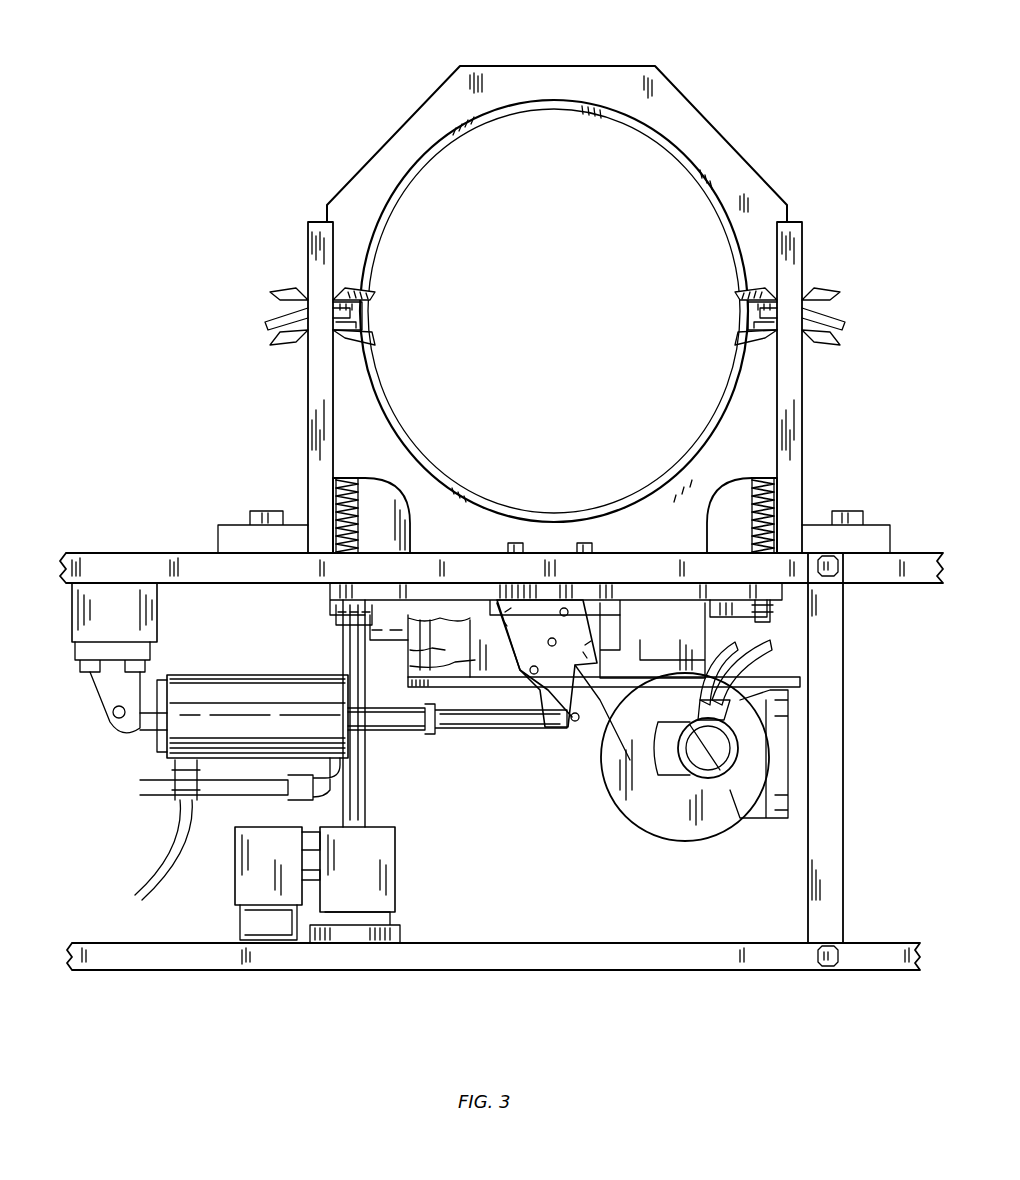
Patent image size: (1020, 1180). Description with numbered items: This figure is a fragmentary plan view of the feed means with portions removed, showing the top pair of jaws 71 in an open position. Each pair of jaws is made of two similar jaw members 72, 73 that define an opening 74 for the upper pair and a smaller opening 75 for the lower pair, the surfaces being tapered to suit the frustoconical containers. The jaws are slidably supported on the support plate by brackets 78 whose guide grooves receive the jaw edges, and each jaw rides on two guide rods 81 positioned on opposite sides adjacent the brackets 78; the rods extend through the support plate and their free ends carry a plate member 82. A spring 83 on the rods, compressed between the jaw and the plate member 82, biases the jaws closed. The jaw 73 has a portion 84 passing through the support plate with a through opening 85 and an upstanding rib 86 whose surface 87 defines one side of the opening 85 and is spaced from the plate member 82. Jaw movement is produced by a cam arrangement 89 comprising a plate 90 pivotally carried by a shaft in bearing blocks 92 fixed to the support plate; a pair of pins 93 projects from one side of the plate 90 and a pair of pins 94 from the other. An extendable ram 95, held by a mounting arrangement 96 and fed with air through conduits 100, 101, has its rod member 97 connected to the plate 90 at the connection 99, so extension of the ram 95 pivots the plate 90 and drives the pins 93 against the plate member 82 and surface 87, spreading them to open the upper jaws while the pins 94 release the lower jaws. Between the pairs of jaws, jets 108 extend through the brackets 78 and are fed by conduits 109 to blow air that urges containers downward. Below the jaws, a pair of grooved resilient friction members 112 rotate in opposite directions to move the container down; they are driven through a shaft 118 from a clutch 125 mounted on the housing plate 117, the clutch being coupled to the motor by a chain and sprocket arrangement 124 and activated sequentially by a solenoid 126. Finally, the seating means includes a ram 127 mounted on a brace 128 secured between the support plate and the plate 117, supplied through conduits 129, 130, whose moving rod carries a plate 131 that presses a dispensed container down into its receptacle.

The pair of jaws 71 is at (716, 134).
The jaw member 72 is at (482, 120).
The jaw member 73 is at (490, 512).
The opening 74 is at (542, 108).
The opening 75 is at (692, 170).
The brackets 78 is at (308, 378).
The guide rods 81 is at (358, 538).
The plate member 82 is at (738, 619).
The spring 83 is at (360, 516).
The portion 84 is at (410, 622).
The through opening 85 is at (592, 715).
The upstanding rib 86 is at (408, 686).
The surface 87 is at (500, 690).
The cam arrangement 89 is at (531, 765).
The plate 90 is at (530, 705).
The bearing blocks 92 is at (480, 600).
The pins 93 is at (549, 620).
The pins 94 is at (533, 637).
The ram 95 is at (228, 676).
The mounting arrangement 96 is at (158, 615).
The rod member 97 is at (450, 735).
The connection 99 is at (550, 715).
The conduit 100 is at (165, 855).
The conduit 101 is at (140, 790).
The jets 108 is at (362, 318).
The conduits 109 is at (268, 320).
The friction members 112 is at (378, 295).
The plate 117 is at (558, 972).
The shaft 118 is at (367, 788).
The chain and sprocket arrangement 124 is at (400, 930).
The clutch 125 is at (395, 860).
The solenoid 126 is at (240, 878).
The ram 127 is at (662, 772).
The brace 128 is at (843, 750).
The conduit 129 is at (773, 650).
The conduit 130 is at (742, 645).
The plate 131 is at (683, 842).